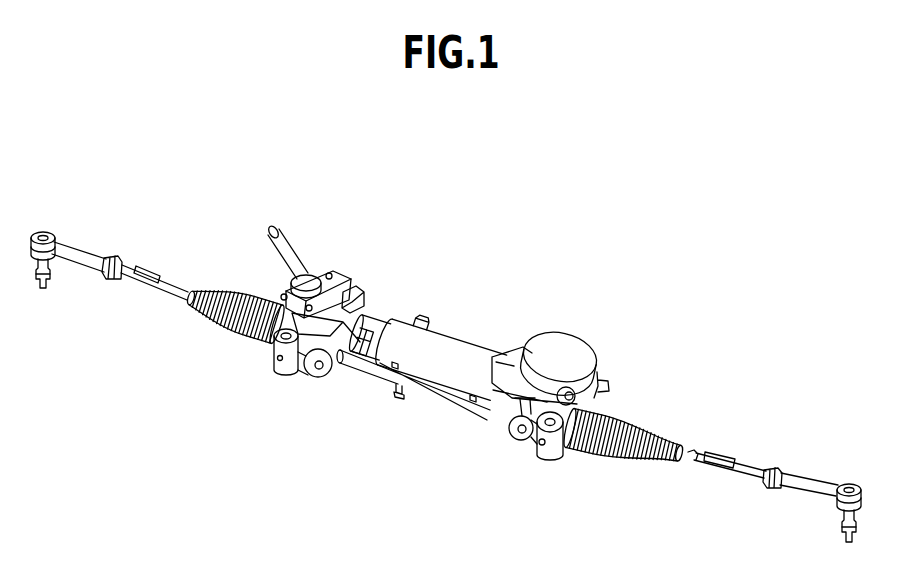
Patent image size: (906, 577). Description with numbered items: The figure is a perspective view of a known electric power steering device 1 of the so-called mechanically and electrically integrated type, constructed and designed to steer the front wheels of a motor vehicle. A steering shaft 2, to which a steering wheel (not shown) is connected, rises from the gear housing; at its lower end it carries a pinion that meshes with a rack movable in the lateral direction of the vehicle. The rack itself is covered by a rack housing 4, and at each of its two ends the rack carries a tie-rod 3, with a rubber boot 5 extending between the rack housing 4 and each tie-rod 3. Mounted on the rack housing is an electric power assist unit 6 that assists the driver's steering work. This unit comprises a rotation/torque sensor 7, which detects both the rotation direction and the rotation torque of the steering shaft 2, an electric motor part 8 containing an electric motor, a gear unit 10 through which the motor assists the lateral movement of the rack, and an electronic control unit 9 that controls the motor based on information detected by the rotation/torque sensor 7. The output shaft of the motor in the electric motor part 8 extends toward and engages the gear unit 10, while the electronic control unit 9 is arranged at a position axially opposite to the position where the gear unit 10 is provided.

The electric power steering device 1 is at (428, 412).
The steering shaft 2 is at (289, 254).
The tie-rods 3 is at (84, 255).
The rack housing 4 is at (566, 446).
The rubber boot 5 is at (226, 293).
The electric power assist unit 6 is at (460, 229).
The rotation/torque sensor 7 is at (358, 290).
The electric motor part 8 is at (458, 346).
The electronic control unit 9 is at (397, 320).
The gear unit 10 is at (563, 342).